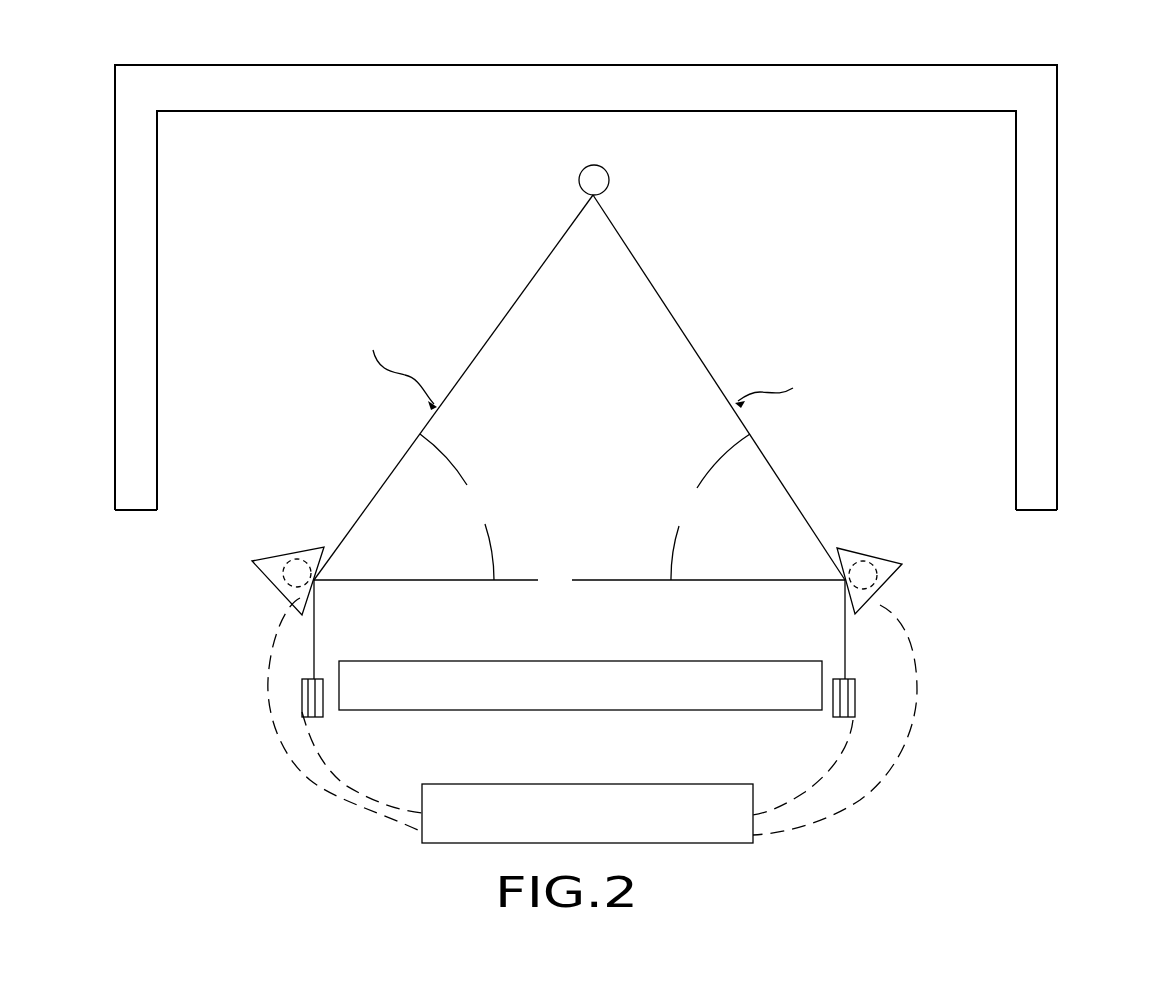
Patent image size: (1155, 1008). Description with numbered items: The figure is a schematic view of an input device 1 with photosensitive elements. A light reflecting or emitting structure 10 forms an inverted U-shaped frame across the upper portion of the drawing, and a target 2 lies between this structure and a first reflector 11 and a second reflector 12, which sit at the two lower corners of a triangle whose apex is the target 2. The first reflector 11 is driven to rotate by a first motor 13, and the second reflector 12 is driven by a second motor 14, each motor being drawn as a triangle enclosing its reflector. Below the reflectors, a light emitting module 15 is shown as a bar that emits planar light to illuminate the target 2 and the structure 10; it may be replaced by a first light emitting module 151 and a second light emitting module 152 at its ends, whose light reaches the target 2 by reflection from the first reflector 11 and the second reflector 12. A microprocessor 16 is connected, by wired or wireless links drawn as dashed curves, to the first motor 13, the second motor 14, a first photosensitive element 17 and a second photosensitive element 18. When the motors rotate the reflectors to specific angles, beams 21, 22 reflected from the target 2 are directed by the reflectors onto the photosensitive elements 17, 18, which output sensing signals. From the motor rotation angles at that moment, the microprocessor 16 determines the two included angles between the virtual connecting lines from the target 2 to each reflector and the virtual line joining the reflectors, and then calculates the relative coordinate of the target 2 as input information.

The input device 1 is at (604, 33).
The light reflecting or emitting structure 10 is at (1043, 159).
The target 2 is at (596, 184).
The beam 21 is at (483, 345).
The beam 22 is at (657, 290).
The first reflector 11 is at (322, 548).
The second reflector 12 is at (890, 562).
The first motor 13 is at (280, 557).
The second motor 14 is at (872, 567).
The light emitting module 15 is at (727, 697).
The first light emitting module 151 is at (318, 681).
The second light emitting module 152 is at (845, 682).
The first photosensitive element 17 is at (302, 708).
The second photosensitive element 18 is at (853, 703).
The microprocessor 16 is at (730, 833).